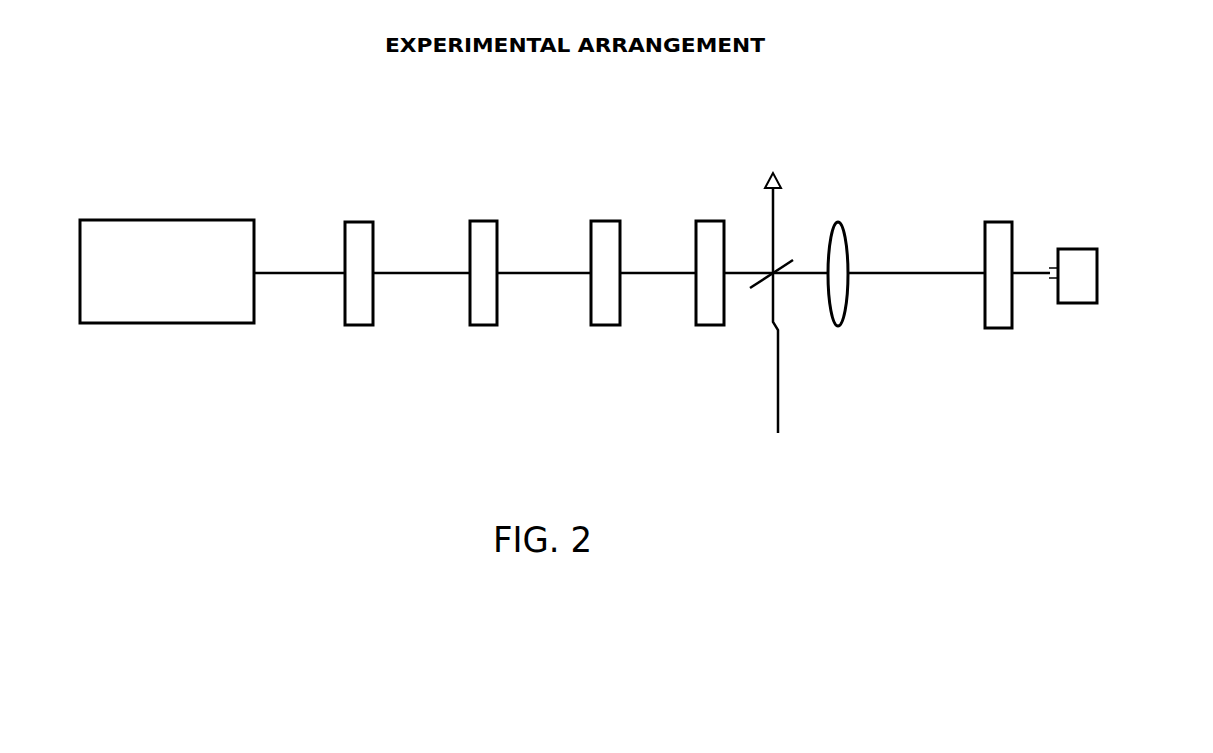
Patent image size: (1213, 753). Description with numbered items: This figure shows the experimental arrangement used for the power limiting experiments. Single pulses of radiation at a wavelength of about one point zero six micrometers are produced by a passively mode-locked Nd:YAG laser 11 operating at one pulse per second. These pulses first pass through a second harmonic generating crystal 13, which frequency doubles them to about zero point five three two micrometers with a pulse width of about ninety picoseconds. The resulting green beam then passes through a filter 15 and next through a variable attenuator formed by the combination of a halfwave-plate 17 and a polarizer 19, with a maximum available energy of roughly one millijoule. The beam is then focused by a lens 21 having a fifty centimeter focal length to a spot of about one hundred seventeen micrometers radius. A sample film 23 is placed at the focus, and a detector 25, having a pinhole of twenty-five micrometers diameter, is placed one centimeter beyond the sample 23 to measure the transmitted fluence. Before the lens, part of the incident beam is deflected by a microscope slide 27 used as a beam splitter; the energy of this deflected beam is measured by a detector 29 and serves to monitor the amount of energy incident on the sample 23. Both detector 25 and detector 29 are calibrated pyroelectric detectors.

The passively mode-locked Nd:YAG laser 11 is at (160, 312).
The second harmonic generating crystal 13 is at (362, 313).
The filter 15 is at (478, 296).
The halfwave-plate 17 is at (608, 317).
The polarizer 19 is at (705, 305).
The lens 21 is at (840, 300).
The sample film 23 is at (998, 317).
The detector 25 is at (1080, 294).
The microscope slide 27 is at (762, 277).
The detector 29 is at (760, 127).